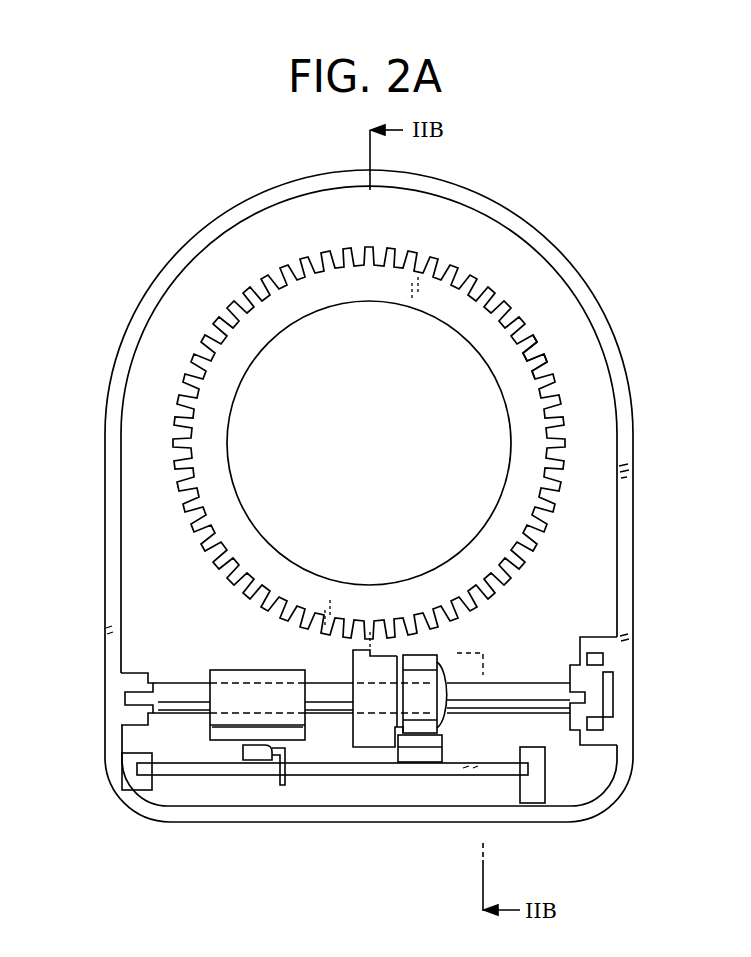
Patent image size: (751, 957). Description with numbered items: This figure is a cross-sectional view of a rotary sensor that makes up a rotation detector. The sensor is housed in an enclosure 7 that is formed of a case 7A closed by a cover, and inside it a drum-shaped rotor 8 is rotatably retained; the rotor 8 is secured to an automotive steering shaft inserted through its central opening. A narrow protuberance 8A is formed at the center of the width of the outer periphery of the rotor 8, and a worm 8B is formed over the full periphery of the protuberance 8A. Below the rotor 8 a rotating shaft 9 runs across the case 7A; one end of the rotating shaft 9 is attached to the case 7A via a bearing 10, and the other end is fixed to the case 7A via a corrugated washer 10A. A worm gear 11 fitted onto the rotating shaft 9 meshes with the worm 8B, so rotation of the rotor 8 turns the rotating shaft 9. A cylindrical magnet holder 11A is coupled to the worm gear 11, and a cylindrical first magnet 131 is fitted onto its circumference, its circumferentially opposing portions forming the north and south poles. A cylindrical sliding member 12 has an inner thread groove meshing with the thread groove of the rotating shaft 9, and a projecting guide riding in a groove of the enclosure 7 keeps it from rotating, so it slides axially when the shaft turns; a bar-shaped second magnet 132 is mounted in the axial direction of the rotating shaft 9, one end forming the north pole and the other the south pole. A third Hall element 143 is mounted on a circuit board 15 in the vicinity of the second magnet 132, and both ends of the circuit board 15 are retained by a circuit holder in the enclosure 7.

The enclosure 7 is at (590, 272).
The case 7A is at (623, 482).
The rotor 8 is at (582, 447).
The protuberance 8A is at (463, 312).
The worm 8B is at (548, 363).
The rotating shaft 9 is at (175, 693).
The bearing 10 is at (595, 663).
The corrugated washer 10A is at (148, 723).
The worm gear 11 is at (369, 758).
The magnet holder 11A is at (418, 716).
The sliding member 12 is at (210, 720).
The first magnet 131 is at (432, 656).
The second magnet 132 is at (230, 733).
The third Hall element 143 is at (262, 753).
The circuit board 15 is at (502, 767).